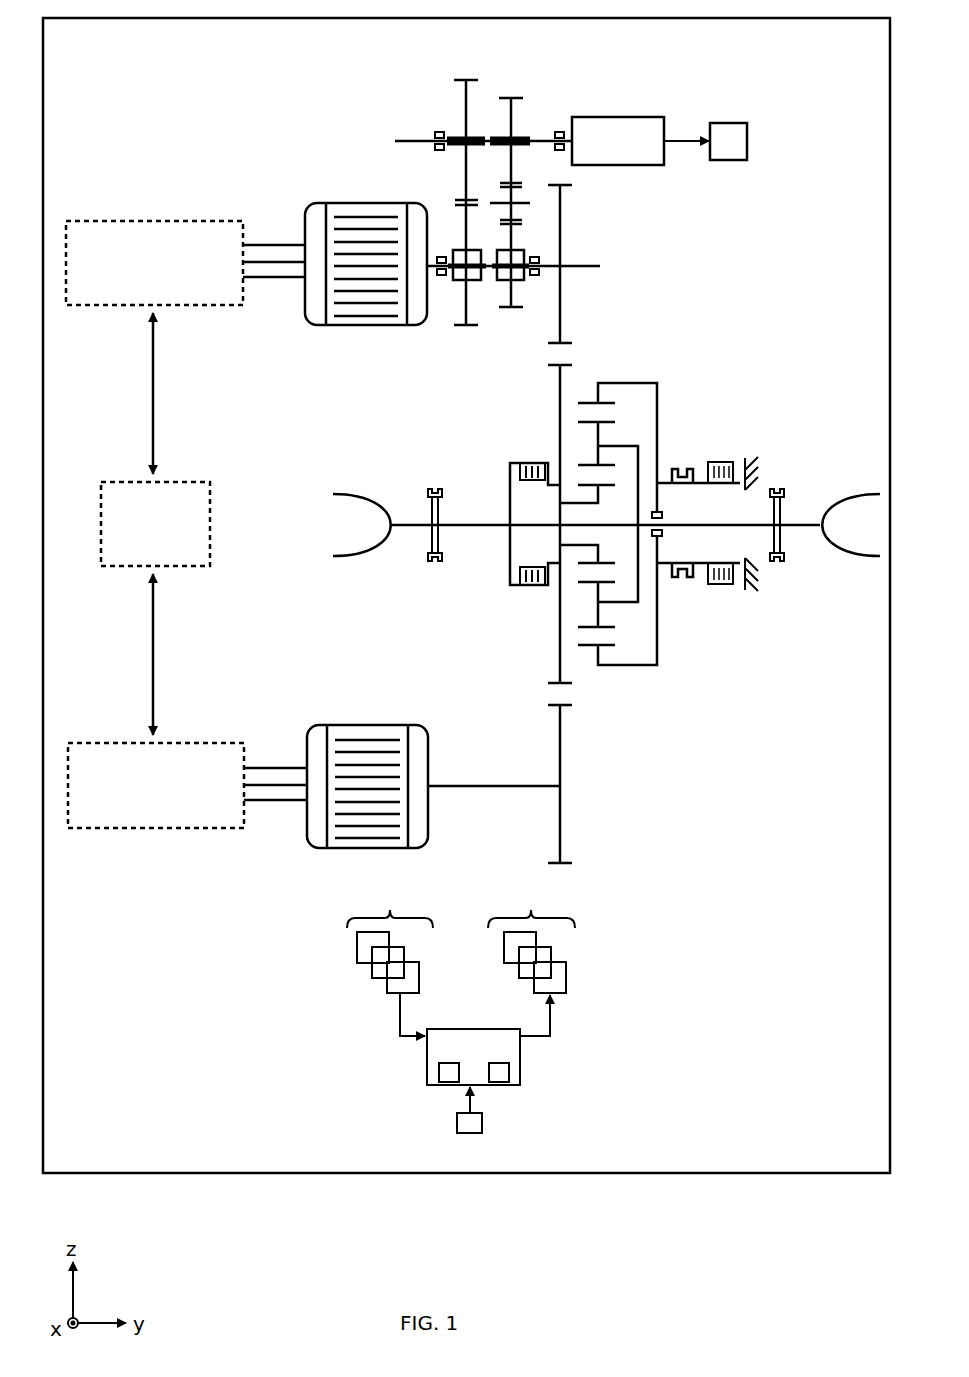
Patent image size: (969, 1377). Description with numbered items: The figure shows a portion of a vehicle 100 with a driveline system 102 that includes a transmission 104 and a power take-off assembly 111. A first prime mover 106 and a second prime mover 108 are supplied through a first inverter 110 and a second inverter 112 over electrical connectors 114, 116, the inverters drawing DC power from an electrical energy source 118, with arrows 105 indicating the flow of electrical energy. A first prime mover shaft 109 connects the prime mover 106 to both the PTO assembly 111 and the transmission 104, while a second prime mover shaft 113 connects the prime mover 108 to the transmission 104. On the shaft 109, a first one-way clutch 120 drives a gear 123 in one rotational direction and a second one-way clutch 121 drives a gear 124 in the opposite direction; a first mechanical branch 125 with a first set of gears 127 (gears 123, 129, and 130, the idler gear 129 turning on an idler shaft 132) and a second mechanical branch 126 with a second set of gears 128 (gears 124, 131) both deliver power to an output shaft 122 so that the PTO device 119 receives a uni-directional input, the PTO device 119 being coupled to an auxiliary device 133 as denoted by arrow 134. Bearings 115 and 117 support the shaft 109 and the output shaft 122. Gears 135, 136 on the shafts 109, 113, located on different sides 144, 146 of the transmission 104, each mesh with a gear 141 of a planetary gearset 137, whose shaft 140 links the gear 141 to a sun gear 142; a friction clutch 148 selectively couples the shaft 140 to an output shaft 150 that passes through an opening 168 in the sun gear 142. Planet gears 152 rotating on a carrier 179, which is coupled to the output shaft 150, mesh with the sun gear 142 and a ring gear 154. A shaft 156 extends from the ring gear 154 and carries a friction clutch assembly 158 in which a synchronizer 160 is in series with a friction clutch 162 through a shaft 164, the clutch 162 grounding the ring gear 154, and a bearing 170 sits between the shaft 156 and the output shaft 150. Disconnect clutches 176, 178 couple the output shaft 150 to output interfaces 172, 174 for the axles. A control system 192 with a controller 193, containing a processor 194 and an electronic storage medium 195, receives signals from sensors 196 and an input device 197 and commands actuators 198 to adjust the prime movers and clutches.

The vehicle 100 is at (50, 18).
The driveline system 102 is at (123, 117).
The transmission 104 is at (845, 192).
The arrows 105 is at (157, 367).
The first prime mover 106 is at (337, 203).
The second prime mover 108 is at (340, 726).
The first prime mover shaft 109 is at (436, 272).
The first inverter 110 is at (71, 219).
The PTO assembly 111 is at (810, 148).
The second inverter 112 is at (71, 741).
The second prime mover shaft 113 is at (493, 784).
The electrical connector 114 is at (275, 222).
The bearing 115 is at (540, 260).
The electrical connector 116 is at (275, 750).
The bearing 117 is at (562, 131).
The electrical energy source 118 is at (100, 530).
The PTO device 119 is at (580, 117).
The first one-way clutch 120 is at (522, 253).
The second one-way clutch 121 is at (452, 250).
The output shaft 122 is at (401, 142).
The gear 123 is at (509, 310).
The gear 124 is at (468, 330).
The first mechanical branch 125 is at (511, 92).
The second mechanical branch 126 is at (466, 78).
The first set of gears 127 is at (533, 118).
The second set of gears 128 is at (448, 85).
The idler gear 129 is at (509, 185).
The gear 130 is at (508, 128).
The gear 131 is at (460, 113).
The idler shaft 132 is at (512, 200).
The auxiliary device 133 is at (737, 123).
The arrow 134 is at (683, 138).
The gear 135 is at (565, 292).
The gear 136 is at (565, 835).
The planetary gearset 137 is at (770, 375).
The shaft 140 is at (578, 505).
The gear 141 is at (558, 408).
The sun gear 142 is at (636, 563).
The side 144 is at (845, 305).
The side 146 is at (845, 752).
The friction clutch 148 is at (525, 458).
The output shaft 150 is at (480, 523).
The planet gears 152 is at (597, 612).
The ring gear 154 is at (585, 648).
The shaft 156 is at (660, 665).
The friction clutch assembly 158 is at (710, 395).
The synchronizer 160 is at (683, 466).
The friction clutch 162 is at (722, 458).
The shaft 164 is at (705, 563).
The opening 168 is at (553, 538).
The bearing 170 is at (662, 516).
The output interface 172 is at (348, 487).
The output interface 174 is at (868, 490).
The disconnect clutch 176 is at (435, 487).
The disconnect clutch 178 is at (780, 490).
The carrier 179 is at (640, 604).
The control system 192 is at (415, 1138).
The controller 193 is at (490, 1060).
The processor 194 is at (439, 1073).
The electronic storage medium 195 is at (510, 1073).
The sensors 196 is at (390, 961).
The input device 197 is at (483, 1123).
The actuators 198 is at (531, 961).